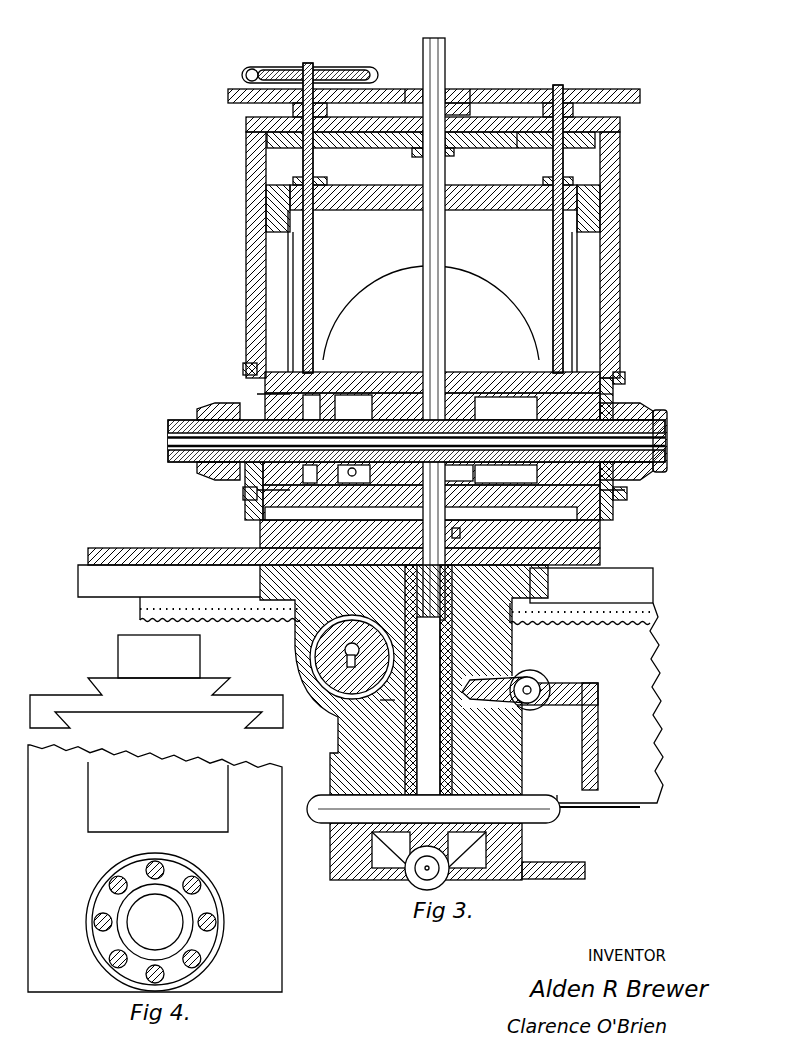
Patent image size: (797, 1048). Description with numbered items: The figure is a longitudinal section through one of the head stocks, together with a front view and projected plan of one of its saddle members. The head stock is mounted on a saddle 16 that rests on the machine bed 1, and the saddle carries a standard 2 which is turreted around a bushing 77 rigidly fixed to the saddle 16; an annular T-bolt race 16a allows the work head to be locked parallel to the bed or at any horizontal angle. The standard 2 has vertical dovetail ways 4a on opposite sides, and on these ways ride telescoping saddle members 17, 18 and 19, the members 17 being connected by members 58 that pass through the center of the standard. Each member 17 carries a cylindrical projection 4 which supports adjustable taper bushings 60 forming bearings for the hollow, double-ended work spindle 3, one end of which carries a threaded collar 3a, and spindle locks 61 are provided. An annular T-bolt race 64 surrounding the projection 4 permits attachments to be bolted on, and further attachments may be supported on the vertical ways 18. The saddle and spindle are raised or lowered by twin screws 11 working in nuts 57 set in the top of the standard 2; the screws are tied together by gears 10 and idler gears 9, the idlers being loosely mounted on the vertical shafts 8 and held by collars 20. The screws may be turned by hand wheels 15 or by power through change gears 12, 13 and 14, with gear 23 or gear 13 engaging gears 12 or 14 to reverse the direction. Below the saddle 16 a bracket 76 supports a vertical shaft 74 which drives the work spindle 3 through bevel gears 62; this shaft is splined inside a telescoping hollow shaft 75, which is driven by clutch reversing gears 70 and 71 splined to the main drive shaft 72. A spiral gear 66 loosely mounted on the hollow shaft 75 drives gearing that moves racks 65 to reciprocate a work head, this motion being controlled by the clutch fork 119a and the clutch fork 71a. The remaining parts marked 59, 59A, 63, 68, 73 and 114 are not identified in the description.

In FIG. 3, the bed 1 is at (652, 667).
In FIG. 3, the standard 2 is at (372, 210).
In FIG. 3, the work spindle 3 is at (668, 418).
In FIG. 3, the threaded collar 3a is at (197, 410).
In FIG. 3, the cylindrical projection 4 is at (118, 651).
In FIG. 3, the vertical dovetail way 4a is at (260, 530).
In FIG. 3, the vertical shaft 8 is at (445, 42).
In FIG. 3, the idler gear 9 is at (382, 148).
In FIG. 3, the gear 10 is at (338, 148).
In FIG. 3, the twin screw 11 is at (308, 65).
In FIG. 3, the change gear 12 is at (386, 89).
In FIG. 3, the change gear 13 is at (407, 89).
In FIG. 3, the change gear 14 is at (512, 86).
In FIG. 3, the hand wheel 15 is at (278, 63).
In FIG. 3, the saddle 16 is at (587, 568).
In FIG. 3, the annular T-bolt race 16a is at (262, 576).
In FIG. 3, the saddle member 17 is at (248, 250).
In FIG. 3, the saddle member 18 is at (92, 683).
In FIG. 4, the saddle member 18 is at (88, 790).
In FIG. 3, the saddle member 19 is at (250, 122).
In FIG. 3, the collar 20 is at (455, 153).
In FIG. 3, the gear 23 is at (462, 111).
In FIG. 3, the nut 57 is at (318, 183).
In FIG. 3, the connecting member 58 is at (476, 375).
In FIG. 3, the bolt 59 is at (258, 395).
In FIG. 4, the bolt 59 is at (96, 922).
In FIG. 3, the bolt 59A is at (617, 392).
In FIG. 3, the adjustable taper bushing 60 is at (660, 409).
In FIG. 3, the spindle lock 61 is at (365, 473).
In FIG. 3, the bevel gear 62 is at (475, 484).
In FIG. 3, the filling 63 is at (587, 613).
In FIG. 3, the annular T-bolt race 64 is at (252, 378).
In FIG. 4, the annular T-bolt race 64 is at (90, 939).
In FIG. 3, the rack 65 is at (612, 623).
In FIG. 3, the spiral gear 66 is at (460, 658).
In FIG. 3, the gear 68 is at (327, 692).
In FIG. 3, the clutch reversing gear 70 is at (432, 843).
In FIG. 3, the clutch reversing gear 71 is at (413, 830).
In FIG. 3, the clutch fork 71a is at (568, 880).
In FIG. 3, the main drive shaft 72 is at (547, 807).
In FIG. 3, the cross rod 73 is at (528, 810).
In FIG. 3, the vertical shaft 74 is at (436, 700).
In FIG. 3, the hollow shaft 75 is at (428, 741).
In FIG. 3, the bracket 76 is at (514, 738).
In FIG. 3, the bushing 77 is at (462, 540).
In FIG. 3, the housing portion 114 is at (380, 702).
In FIG. 3, the clutch fork 119a is at (578, 704).